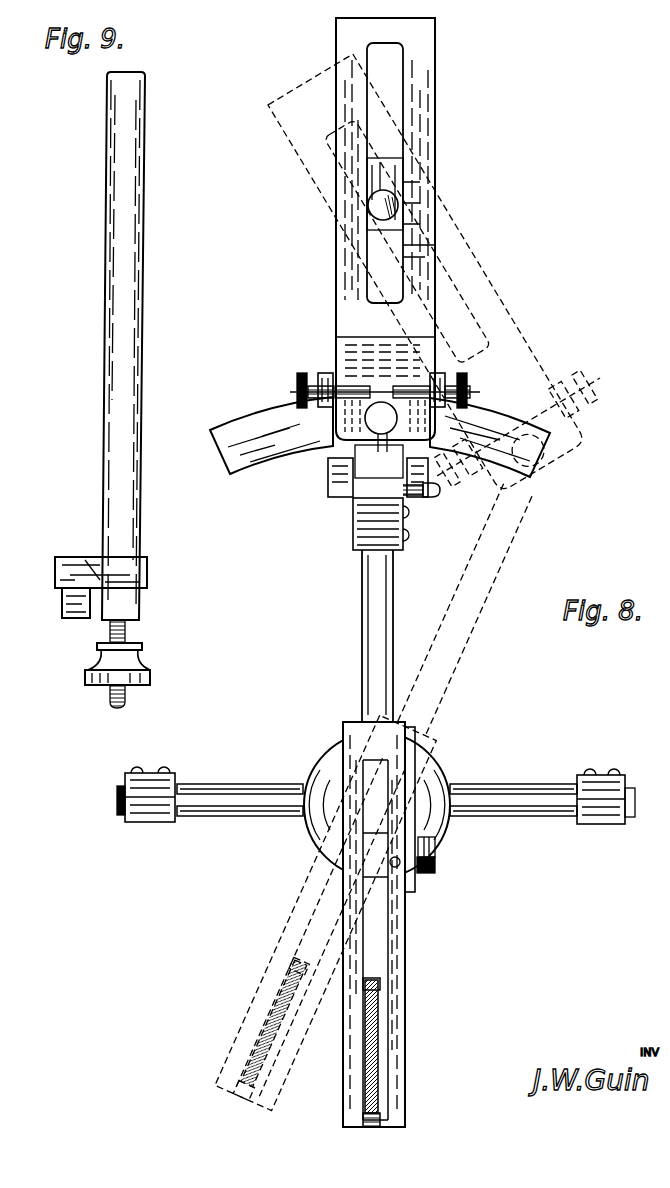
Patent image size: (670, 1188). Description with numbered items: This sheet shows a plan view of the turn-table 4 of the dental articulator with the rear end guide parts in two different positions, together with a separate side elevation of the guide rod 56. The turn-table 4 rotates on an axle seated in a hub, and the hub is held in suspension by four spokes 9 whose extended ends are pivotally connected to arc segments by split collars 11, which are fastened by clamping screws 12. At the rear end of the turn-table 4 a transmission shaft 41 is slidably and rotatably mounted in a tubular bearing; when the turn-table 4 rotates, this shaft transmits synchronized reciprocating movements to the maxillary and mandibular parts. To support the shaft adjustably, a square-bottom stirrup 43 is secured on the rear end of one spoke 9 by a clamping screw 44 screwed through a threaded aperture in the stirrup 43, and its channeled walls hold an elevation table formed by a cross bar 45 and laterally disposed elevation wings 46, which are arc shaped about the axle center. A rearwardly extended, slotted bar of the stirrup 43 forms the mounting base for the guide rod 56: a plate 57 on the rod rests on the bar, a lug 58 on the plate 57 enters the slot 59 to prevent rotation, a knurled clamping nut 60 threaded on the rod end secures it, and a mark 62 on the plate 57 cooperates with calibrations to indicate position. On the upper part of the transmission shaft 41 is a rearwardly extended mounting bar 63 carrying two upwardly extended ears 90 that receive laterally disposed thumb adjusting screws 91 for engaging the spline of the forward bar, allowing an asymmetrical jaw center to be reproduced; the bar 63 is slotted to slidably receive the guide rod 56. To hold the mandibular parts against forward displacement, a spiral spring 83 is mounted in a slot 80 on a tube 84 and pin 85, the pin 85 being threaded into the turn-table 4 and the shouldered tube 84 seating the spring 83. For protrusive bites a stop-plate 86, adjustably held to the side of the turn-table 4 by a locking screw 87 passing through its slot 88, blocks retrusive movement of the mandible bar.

In FIG. 8, the turn-table 4 is at (385, 600).
In FIG. 8, the spokes 9 is at (393, 575).
In FIG. 8, the split collars 11 is at (150, 812).
In FIG. 8, the clamping screws 12 is at (164, 768).
In FIG. 8, the transmission shaft 41 is at (345, 443).
In FIG. 8, the stirrup 43 is at (340, 477).
In FIG. 8, the clamp screw 44 is at (440, 492).
In FIG. 8, the cross bar 45 is at (356, 495).
In FIG. 8, the elevation wings 46 is at (245, 445).
In FIG. 9, the guide rod 56 is at (138, 318).
In FIG. 8, the guide rod 56 is at (400, 197).
In FIG. 9, the plate 57 is at (135, 573).
In FIG. 8, the plate 57 is at (395, 173).
In FIG. 9, the lug 58 is at (78, 612).
In FIG. 8, the slot 59 is at (393, 87).
In FIG. 9, the knurled clamping nut 60 is at (150, 674).
In FIG. 9, the mark 62 is at (96, 566).
In FIG. 8, the rearwardly extended mounting bar 63 is at (420, 140).
In FIG. 8, the slot 80 is at (375, 940).
In FIG. 8, the spiral spring 83 is at (375, 1082).
In FIG. 8, the tube 84 is at (380, 982).
In FIG. 8, the pin 85 is at (370, 1128).
In FIG. 8, the stop-plate 86 is at (410, 886).
In FIG. 8, the locking screw 87 is at (435, 865).
In FIG. 8, the slot 88 is at (436, 845).
In FIG. 8, the ears 90 is at (325, 374).
In FIG. 8, the thumb adjusting screws 91 is at (297, 392).